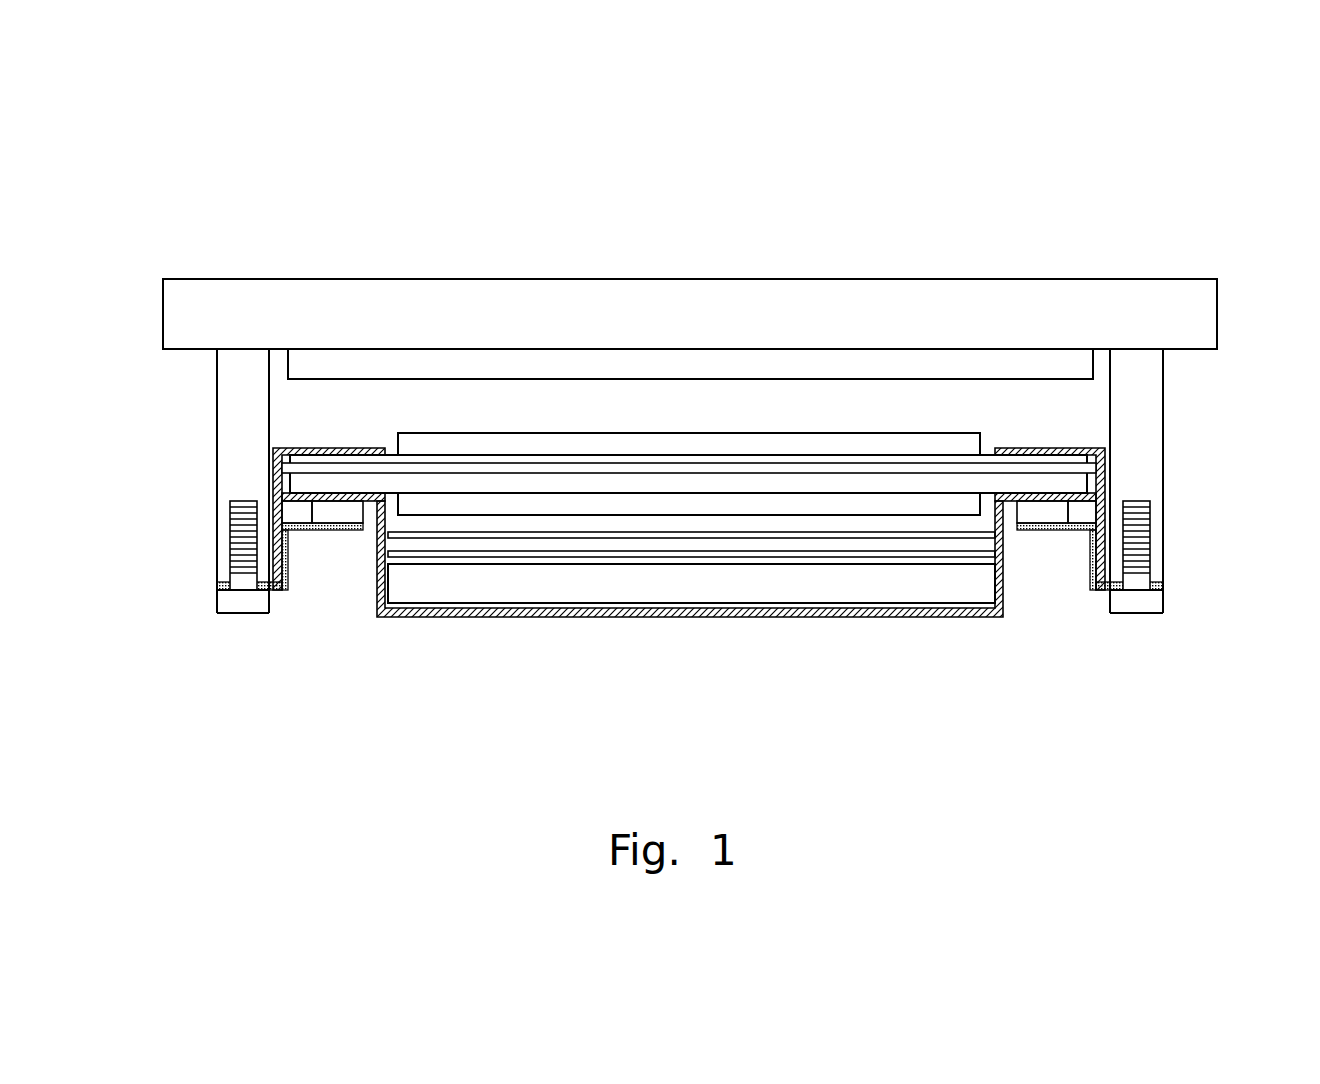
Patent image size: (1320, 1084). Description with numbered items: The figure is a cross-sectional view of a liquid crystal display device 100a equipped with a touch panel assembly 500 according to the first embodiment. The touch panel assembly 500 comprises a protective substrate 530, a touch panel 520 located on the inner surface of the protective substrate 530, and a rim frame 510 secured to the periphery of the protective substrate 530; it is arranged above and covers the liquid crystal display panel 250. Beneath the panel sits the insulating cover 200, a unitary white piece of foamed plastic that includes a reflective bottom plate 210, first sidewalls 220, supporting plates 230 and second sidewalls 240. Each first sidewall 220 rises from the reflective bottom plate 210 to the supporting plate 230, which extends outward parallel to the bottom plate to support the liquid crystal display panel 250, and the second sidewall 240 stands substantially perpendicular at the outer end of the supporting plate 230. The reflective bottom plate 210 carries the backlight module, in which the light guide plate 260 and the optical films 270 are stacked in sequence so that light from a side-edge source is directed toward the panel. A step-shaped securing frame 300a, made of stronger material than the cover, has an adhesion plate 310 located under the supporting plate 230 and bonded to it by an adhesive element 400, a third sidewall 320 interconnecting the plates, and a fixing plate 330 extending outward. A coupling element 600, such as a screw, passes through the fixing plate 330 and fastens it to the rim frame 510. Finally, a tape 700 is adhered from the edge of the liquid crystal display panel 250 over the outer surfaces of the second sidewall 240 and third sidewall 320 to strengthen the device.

The liquid crystal display device 100a is at (986, 238).
The touch panel assembly 500 is at (395, 187).
The rim frame 510 is at (243, 368).
The touch panel 520 is at (318, 360).
The protective substrate 530 is at (393, 292).
The tape 700 is at (282, 452).
The insulating cover 200 is at (525, 735).
The reflective bottom plate 210 is at (522, 618).
The first sidewall 220 is at (377, 587).
The supporting plate 230 is at (342, 505).
The second sidewall 240 is at (295, 528).
The securing frame 300a is at (1130, 712).
The adhesion plate 310 is at (1038, 532).
The third sidewall 320 is at (1090, 562).
The fixing plate 330 is at (1103, 592).
The adhesive element 400 is at (1040, 513).
The coupling element 600 is at (223, 600).
The liquid crystal display panel 250 is at (447, 480).
The light guide plate 260 is at (650, 583).
The optical films 270 is at (793, 530).